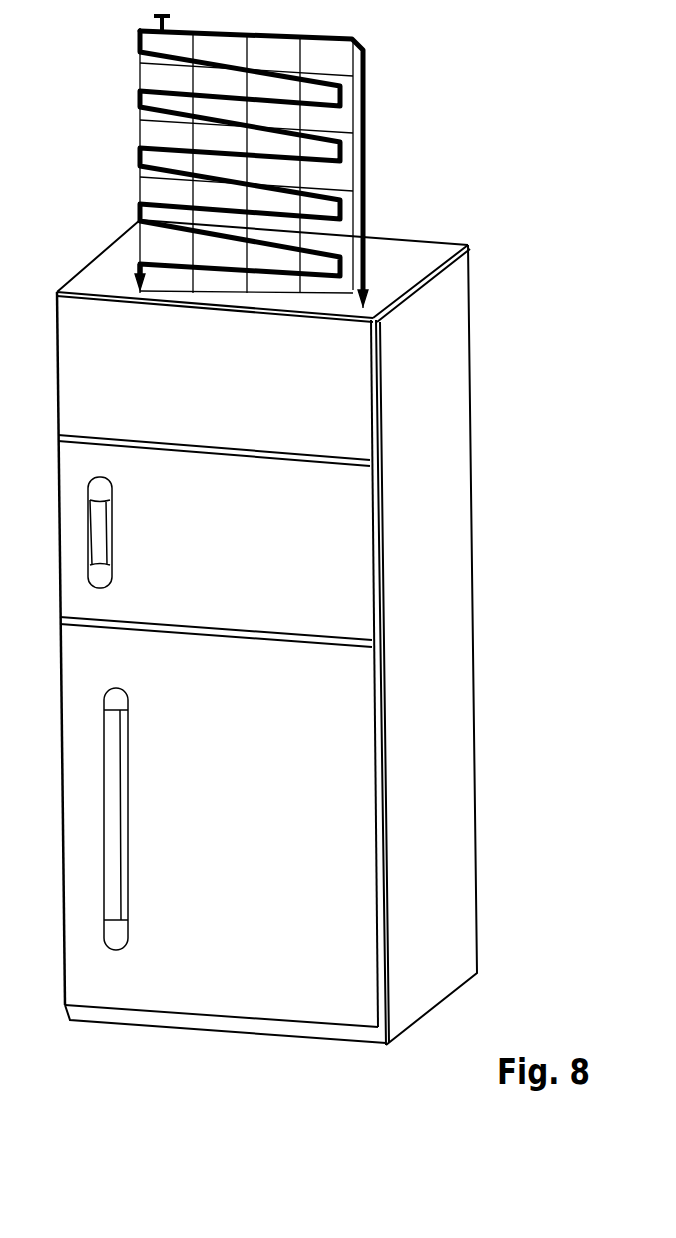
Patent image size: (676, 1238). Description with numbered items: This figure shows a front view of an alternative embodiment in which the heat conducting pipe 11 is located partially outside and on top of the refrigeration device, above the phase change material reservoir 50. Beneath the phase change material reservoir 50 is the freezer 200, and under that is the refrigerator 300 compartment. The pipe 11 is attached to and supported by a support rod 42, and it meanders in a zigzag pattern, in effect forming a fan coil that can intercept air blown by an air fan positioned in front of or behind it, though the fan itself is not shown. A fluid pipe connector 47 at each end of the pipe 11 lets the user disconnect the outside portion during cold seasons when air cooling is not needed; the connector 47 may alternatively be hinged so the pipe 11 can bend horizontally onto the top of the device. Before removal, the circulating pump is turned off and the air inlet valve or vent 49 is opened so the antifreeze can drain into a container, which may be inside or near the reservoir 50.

The heat conducting pipe 11 is at (138, 158).
The support rod 42 is at (138, 126).
The pipe connector 47 is at (136, 270).
The air inlet valve or vent 49 is at (155, 18).
The phase change material reservoir 50 is at (98, 318).
The freezer 200 is at (357, 508).
The refrigerator compartment 300 is at (345, 730).